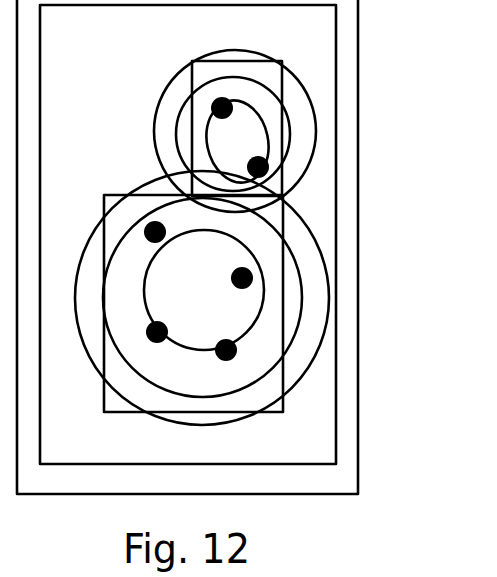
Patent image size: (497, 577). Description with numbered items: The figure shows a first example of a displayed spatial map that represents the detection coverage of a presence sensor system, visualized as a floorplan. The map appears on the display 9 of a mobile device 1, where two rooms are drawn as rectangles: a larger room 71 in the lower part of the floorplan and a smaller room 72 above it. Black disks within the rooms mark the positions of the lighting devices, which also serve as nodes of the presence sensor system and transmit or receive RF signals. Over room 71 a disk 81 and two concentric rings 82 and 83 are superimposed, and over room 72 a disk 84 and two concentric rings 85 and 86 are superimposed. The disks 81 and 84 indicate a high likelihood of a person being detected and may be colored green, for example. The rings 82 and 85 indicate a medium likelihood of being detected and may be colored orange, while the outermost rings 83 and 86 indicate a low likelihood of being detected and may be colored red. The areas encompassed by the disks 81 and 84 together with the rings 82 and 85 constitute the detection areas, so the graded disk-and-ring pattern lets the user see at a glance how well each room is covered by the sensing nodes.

The mobile device 1 is at (358, 423).
The display 9 is at (334, 462).
The room 71 is at (115, 413).
The room 72 is at (241, 63).
The disk 81 is at (264, 293).
The ring 82 is at (296, 258).
The ring 83 is at (297, 214).
The disk 84 is at (268, 136).
The ring 85 is at (285, 110).
The ring 86 is at (287, 70).